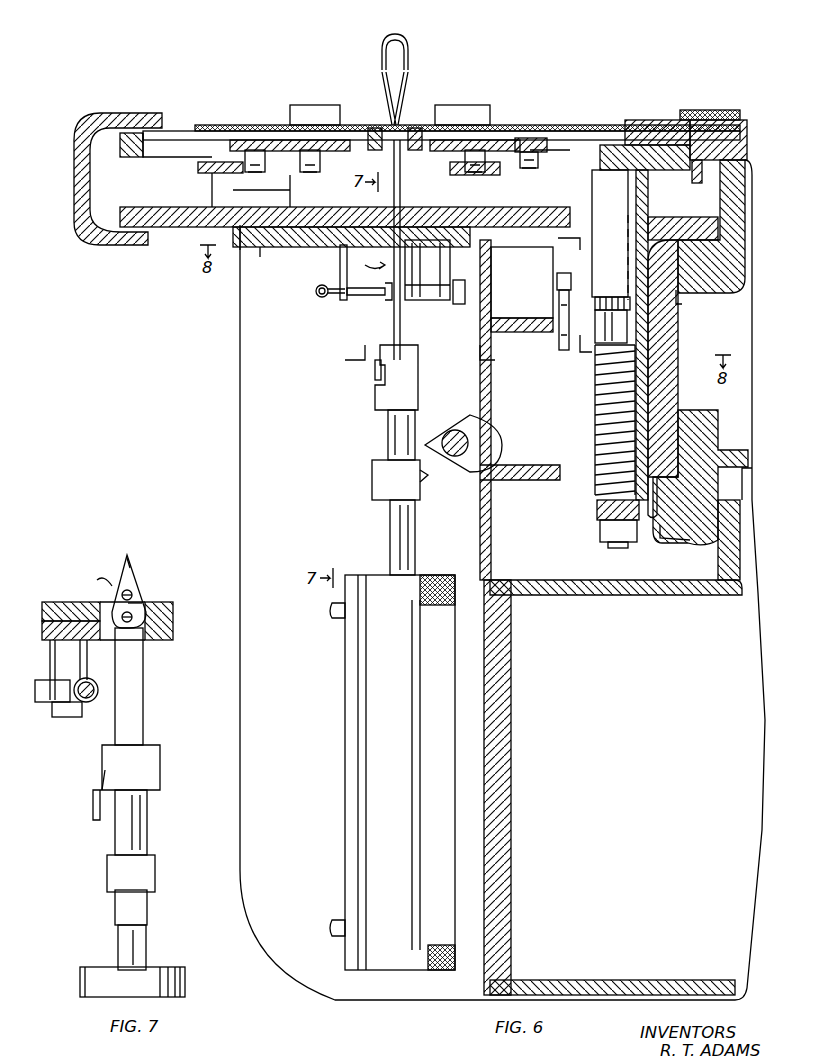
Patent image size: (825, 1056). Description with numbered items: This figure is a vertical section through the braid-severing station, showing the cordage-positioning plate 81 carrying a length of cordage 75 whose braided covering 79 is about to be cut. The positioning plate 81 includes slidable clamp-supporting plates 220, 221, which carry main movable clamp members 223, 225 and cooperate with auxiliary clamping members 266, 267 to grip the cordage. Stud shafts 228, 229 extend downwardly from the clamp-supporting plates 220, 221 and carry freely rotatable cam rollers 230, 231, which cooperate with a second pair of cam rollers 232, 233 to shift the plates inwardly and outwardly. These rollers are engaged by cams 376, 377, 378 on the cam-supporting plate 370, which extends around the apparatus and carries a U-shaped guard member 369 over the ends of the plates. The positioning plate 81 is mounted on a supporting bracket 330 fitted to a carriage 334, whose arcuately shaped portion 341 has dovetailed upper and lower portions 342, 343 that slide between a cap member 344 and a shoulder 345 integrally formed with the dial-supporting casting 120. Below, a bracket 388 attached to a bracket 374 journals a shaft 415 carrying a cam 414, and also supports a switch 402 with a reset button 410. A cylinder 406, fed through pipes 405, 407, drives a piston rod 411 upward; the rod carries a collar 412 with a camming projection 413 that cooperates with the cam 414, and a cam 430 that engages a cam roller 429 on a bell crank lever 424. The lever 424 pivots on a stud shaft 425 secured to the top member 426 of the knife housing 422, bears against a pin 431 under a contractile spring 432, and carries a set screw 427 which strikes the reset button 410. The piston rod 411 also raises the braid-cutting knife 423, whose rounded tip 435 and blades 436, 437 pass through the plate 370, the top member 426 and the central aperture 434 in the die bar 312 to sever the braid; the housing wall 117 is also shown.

In FIG. 6, the cordage 75 is at (632, 120).
In FIG. 6, the braided covering 79 is at (200, 127).
In FIG. 6, the cordage-positioning plate 81 is at (690, 118).
In FIG. 6, the housing wall 117 is at (508, 768).
In FIG. 6, the dial-supporting casting 120 is at (703, 440).
In FIG. 6, the slidable clamp-supporting plate 220 is at (238, 138).
In FIG. 6, the second slidable clamp-supporting plate 221 is at (530, 136).
In FIG. 6, the main movable clamp member 223 is at (315, 110).
In FIG. 6, the main movable clamp member 225 is at (482, 107).
In FIG. 6, the stud shaft 228 is at (258, 138).
In FIG. 6, the stud shaft 229 is at (525, 150).
In FIG. 6, the cam roller 230 is at (251, 178).
In FIG. 6, the cam roller 231 is at (542, 153).
In FIG. 6, the cam roller 232 is at (303, 172).
In FIG. 6, the cam roller 233 is at (486, 176).
In FIG. 6, the auxiliary clamping member 266 is at (372, 126).
In FIG. 6, the auxiliary clamping member 267 is at (418, 126).
In FIG. 6, the die bar 312 is at (405, 160).
In FIG. 6, the supporting bracket 330 is at (655, 120).
In FIG. 6, the carriage 334 is at (684, 326).
In FIG. 6, the arcuately shaped portion 341 is at (662, 340).
In FIG. 6, the dovetailed upper portion 342 is at (695, 302).
In FIG. 6, the dovetailed lower portion 343 is at (668, 410).
In FIG. 6, the cap member 344 is at (697, 217).
In FIG. 6, the shoulder 345 is at (666, 544).
In FIG. 6, the guard member 369 is at (116, 248).
In FIG. 6, the cam-supporting plate 370 is at (185, 229).
In FIG. 7, the cam-supporting plate 370 is at (61, 603).
In FIG. 6, the bracket 374 is at (240, 347).
In FIG. 6, the cam track 376 is at (198, 170).
In FIG. 6, the cam 377 is at (468, 176).
In FIG. 6, the cam track 378 is at (566, 160).
In FIG. 6, the bracket 388 is at (546, 335).
In FIG. 6, the switch 402 is at (528, 318).
In FIG. 6, the pipe 405 is at (332, 615).
In FIG. 6, the cylinder 406 is at (345, 711).
In FIG. 7, the cylinder 406 is at (80, 978).
In FIG. 6, the pipe 407 is at (335, 918).
In FIG. 6, the reset button 410 is at (490, 285).
In FIG. 6, the piston rod 411 is at (415, 544).
In FIG. 7, the piston rod 411 is at (118, 941).
In FIG. 6, the collar 412 is at (420, 485).
In FIG. 7, the collar 412 is at (108, 871).
In FIG. 6, the camming projection 413 is at (428, 480).
In FIG. 6, the cam 414 is at (466, 418).
In FIG. 6, the shaft 415 is at (470, 441).
In FIG. 6, the knife housing 422 is at (478, 350).
In FIG. 6, the braid-cutting knife 423 is at (369, 256).
In FIG. 7, the braid-cutting knife 423 is at (155, 579).
In FIG. 6, the bell crank lever 424 is at (343, 300).
In FIG. 6, the stud shaft 425 is at (425, 302).
In FIG. 6, the top member 426 is at (261, 252).
In FIG. 7, the top member 426 is at (45, 640).
In FIG. 6, the set screw 427 is at (458, 306).
In FIG. 6, the cam roller 429 is at (383, 298).
In FIG. 7, the cam roller 429 is at (98, 703).
In FIG. 6, the cam 430 is at (378, 390).
In FIG. 7, the cam 430 is at (92, 799).
In FIG. 6, the pin 431 is at (345, 295).
In FIG. 6, the contractile spring 432 is at (320, 297).
In FIG. 6, the central aperture 434 is at (358, 110).
In FIG. 7, the rounded tip 435 is at (132, 557).
In FIG. 7, the blade 436 is at (94, 589).
In FIG. 7, the blade 437 is at (145, 594).